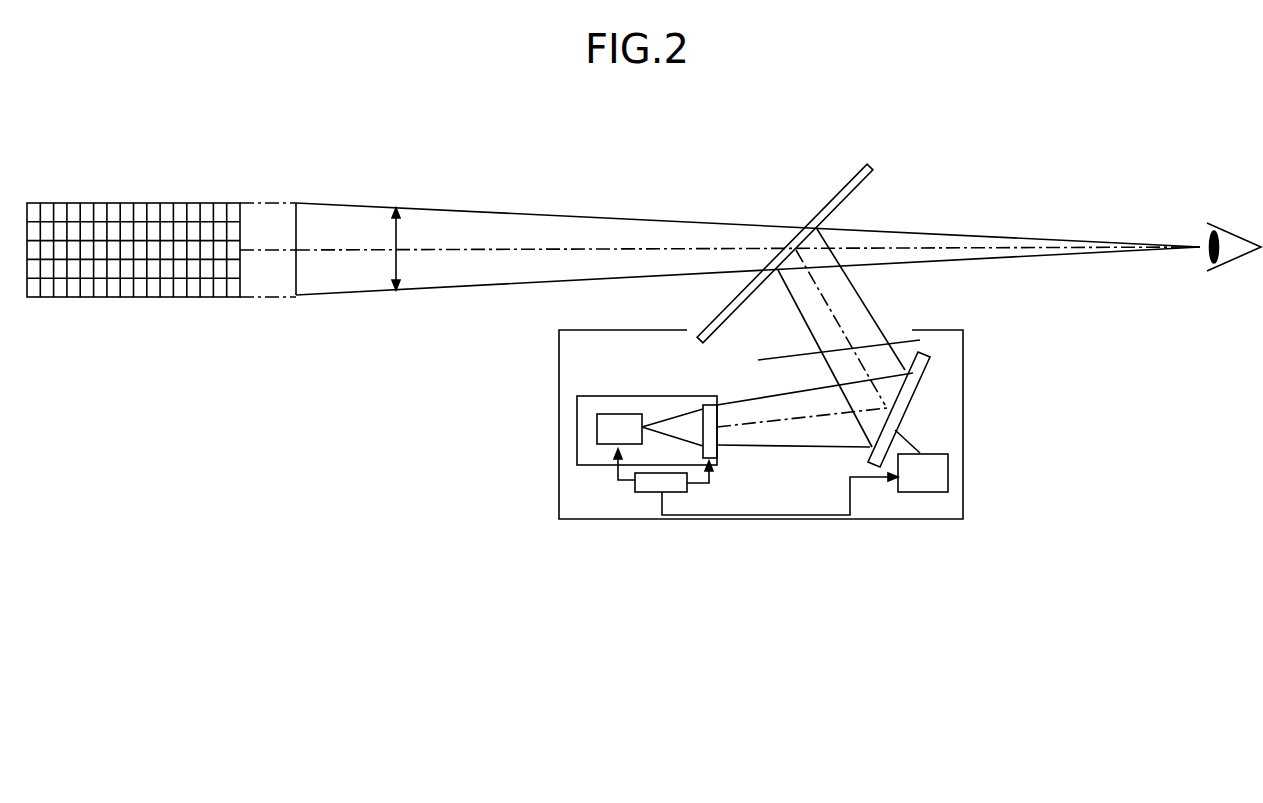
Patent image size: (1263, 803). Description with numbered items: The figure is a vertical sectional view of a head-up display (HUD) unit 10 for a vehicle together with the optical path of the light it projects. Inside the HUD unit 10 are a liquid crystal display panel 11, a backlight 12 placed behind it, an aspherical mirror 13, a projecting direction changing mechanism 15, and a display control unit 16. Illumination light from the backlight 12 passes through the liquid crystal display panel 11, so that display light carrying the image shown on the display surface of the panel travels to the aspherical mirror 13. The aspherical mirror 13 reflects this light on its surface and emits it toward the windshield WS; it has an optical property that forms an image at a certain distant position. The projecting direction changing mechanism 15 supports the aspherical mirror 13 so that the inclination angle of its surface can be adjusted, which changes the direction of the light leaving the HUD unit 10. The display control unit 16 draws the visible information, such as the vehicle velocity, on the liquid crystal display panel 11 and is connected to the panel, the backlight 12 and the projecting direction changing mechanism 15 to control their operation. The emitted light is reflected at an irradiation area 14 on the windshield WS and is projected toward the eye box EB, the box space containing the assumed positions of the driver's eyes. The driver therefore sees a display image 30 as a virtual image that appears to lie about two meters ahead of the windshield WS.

The display image 30 is at (220, 297).
The windshield WS is at (832, 205).
The irradiation area 14 is at (777, 276).
The eye box EB is at (1232, 258).
The head-up display (HUD) unit 10 is at (963, 420).
The liquid crystal display panel 11 is at (717, 445).
The backlight 12 is at (597, 437).
The aspherical mirror 13 is at (917, 377).
The projecting direction changing mechanism 15 is at (945, 475).
The display control unit 16 is at (635, 480).